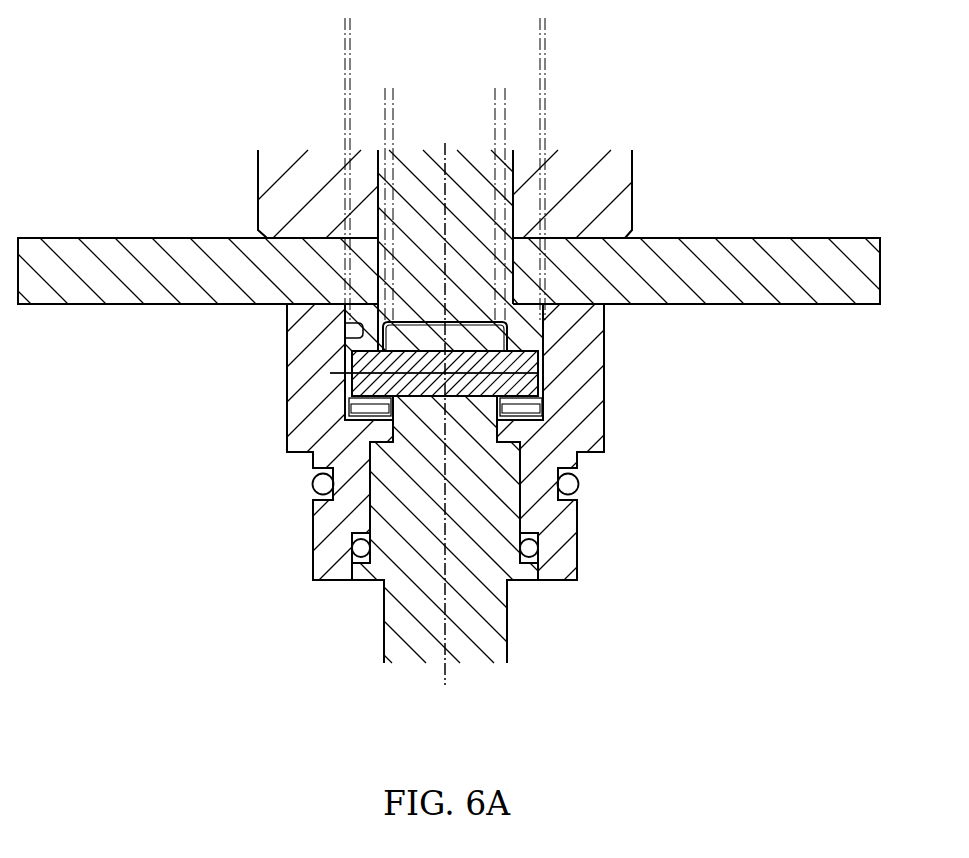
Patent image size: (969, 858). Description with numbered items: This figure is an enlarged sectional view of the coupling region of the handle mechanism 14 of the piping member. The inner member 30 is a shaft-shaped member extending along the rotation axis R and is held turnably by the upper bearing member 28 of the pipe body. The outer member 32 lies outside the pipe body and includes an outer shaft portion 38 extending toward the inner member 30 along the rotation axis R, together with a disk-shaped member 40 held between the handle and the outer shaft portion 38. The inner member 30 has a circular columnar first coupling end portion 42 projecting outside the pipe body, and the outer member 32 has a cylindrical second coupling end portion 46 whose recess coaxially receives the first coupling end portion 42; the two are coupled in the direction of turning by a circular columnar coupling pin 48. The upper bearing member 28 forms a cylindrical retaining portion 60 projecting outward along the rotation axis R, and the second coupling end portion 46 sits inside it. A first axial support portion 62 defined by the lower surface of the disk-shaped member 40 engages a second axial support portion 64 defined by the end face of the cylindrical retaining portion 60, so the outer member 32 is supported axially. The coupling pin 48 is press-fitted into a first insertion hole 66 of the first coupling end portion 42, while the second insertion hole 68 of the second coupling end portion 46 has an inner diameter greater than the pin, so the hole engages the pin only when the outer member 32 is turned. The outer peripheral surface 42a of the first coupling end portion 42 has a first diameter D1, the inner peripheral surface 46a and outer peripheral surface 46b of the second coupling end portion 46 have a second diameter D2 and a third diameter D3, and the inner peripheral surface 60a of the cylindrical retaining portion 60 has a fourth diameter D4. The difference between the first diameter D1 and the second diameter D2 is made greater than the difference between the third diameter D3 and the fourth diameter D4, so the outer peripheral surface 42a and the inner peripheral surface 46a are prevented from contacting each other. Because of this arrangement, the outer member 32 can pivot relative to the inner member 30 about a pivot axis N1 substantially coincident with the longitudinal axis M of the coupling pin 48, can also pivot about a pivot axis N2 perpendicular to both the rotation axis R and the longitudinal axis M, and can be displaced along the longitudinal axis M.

The handle mechanism 14 is at (287, 150).
The outer member 32 is at (257, 178).
The outer shaft portion 38 is at (433, 243).
The disk-shaped member 40 is at (86, 257).
The first axial support portion 62 is at (286, 306).
The second axial support portion 64 is at (317, 290).
The cylindrical retaining portion 60 is at (307, 338).
The inner peripheral surface 60a is at (357, 326).
The second coupling end portion 46 is at (360, 369).
The inner peripheral surface 46a is at (395, 380).
The outer peripheral surface 46b is at (390, 335).
The coupling pin 48 is at (523, 375).
The first coupling end portion 42 is at (362, 426).
The outer peripheral surface 42a is at (400, 409).
The second insertion hole 68 is at (535, 410).
The first insertion hole 66 is at (578, 478).
The upper bearing member 28 is at (330, 522).
The inner member 30 is at (372, 566).
The first diameter D1 is at (495, 130).
The second diameter D2 is at (505, 98).
The third diameter D3 is at (540, 63).
The fourth diameter D4 is at (545, 29).
The longitudinal axis M is at (443, 368).
The pivot axis N1 is at (443, 368).
The pivot axis N2 is at (443, 373).
The rotation axis R is at (446, 677).